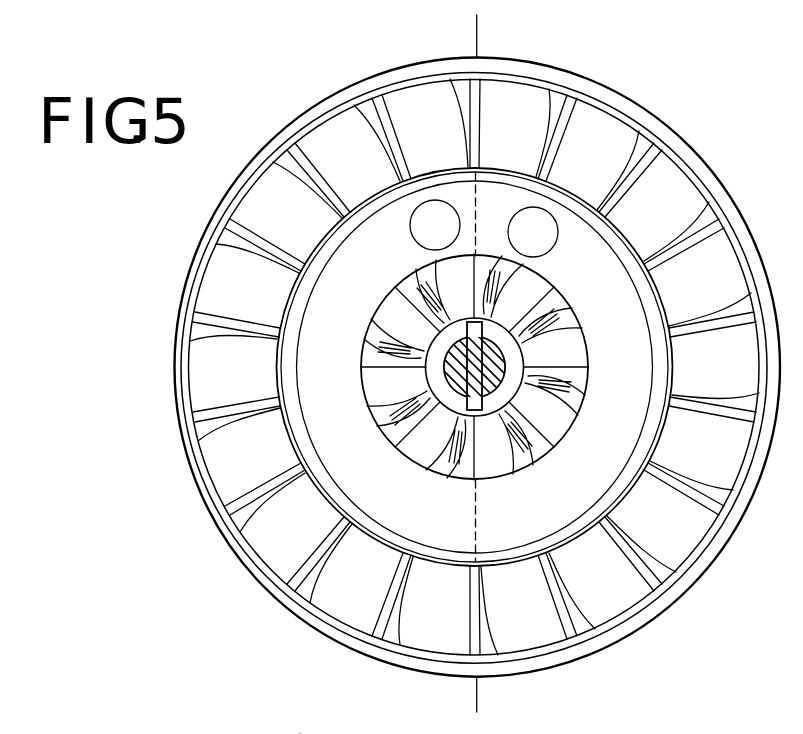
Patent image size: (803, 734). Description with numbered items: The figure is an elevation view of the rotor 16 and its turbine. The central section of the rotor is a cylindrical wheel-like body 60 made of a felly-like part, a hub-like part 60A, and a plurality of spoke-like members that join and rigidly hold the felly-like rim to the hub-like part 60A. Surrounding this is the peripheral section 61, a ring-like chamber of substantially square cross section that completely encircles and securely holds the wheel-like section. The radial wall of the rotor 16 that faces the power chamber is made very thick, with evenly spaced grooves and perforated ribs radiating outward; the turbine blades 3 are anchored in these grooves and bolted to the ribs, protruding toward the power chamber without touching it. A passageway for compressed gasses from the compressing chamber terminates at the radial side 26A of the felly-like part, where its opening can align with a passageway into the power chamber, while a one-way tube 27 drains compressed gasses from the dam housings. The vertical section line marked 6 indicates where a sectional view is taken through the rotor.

The turbine blades 3 is at (687, 413).
The rotor 16 is at (272, 440).
The one-way tube 27 is at (428, 240).
The radial side of felly-like part 26A is at (532, 237).
The cylindrical wheel-like body 60 is at (418, 470).
The hub-like part 60A is at (495, 482).
The peripheral section 61 is at (300, 733).
The section line 6- 6 is at (494, 712).